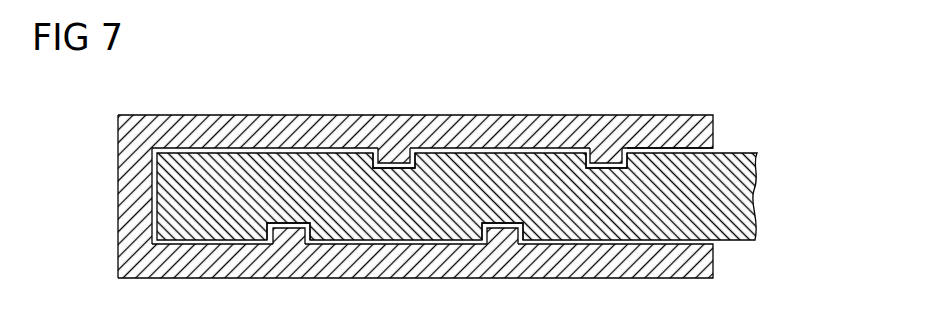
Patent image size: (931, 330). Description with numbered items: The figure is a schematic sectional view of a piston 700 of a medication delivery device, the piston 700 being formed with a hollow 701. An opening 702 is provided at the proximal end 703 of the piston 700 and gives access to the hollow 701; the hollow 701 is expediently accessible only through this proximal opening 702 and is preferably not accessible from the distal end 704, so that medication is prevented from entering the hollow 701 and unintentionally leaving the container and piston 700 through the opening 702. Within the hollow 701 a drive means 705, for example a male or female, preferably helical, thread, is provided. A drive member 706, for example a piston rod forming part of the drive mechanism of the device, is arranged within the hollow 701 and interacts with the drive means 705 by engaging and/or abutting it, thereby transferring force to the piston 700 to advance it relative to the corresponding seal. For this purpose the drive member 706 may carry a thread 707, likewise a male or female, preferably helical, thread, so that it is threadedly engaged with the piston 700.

The piston 700 is at (425, 198).
The hollow 701 is at (619, 147).
The opening 702 is at (714, 243).
The proximal end 703 is at (728, 125).
The distal end 704 is at (108, 184).
The drive means 705 is at (401, 151).
The drive member 706 is at (753, 197).
The thread 707 is at (393, 168).